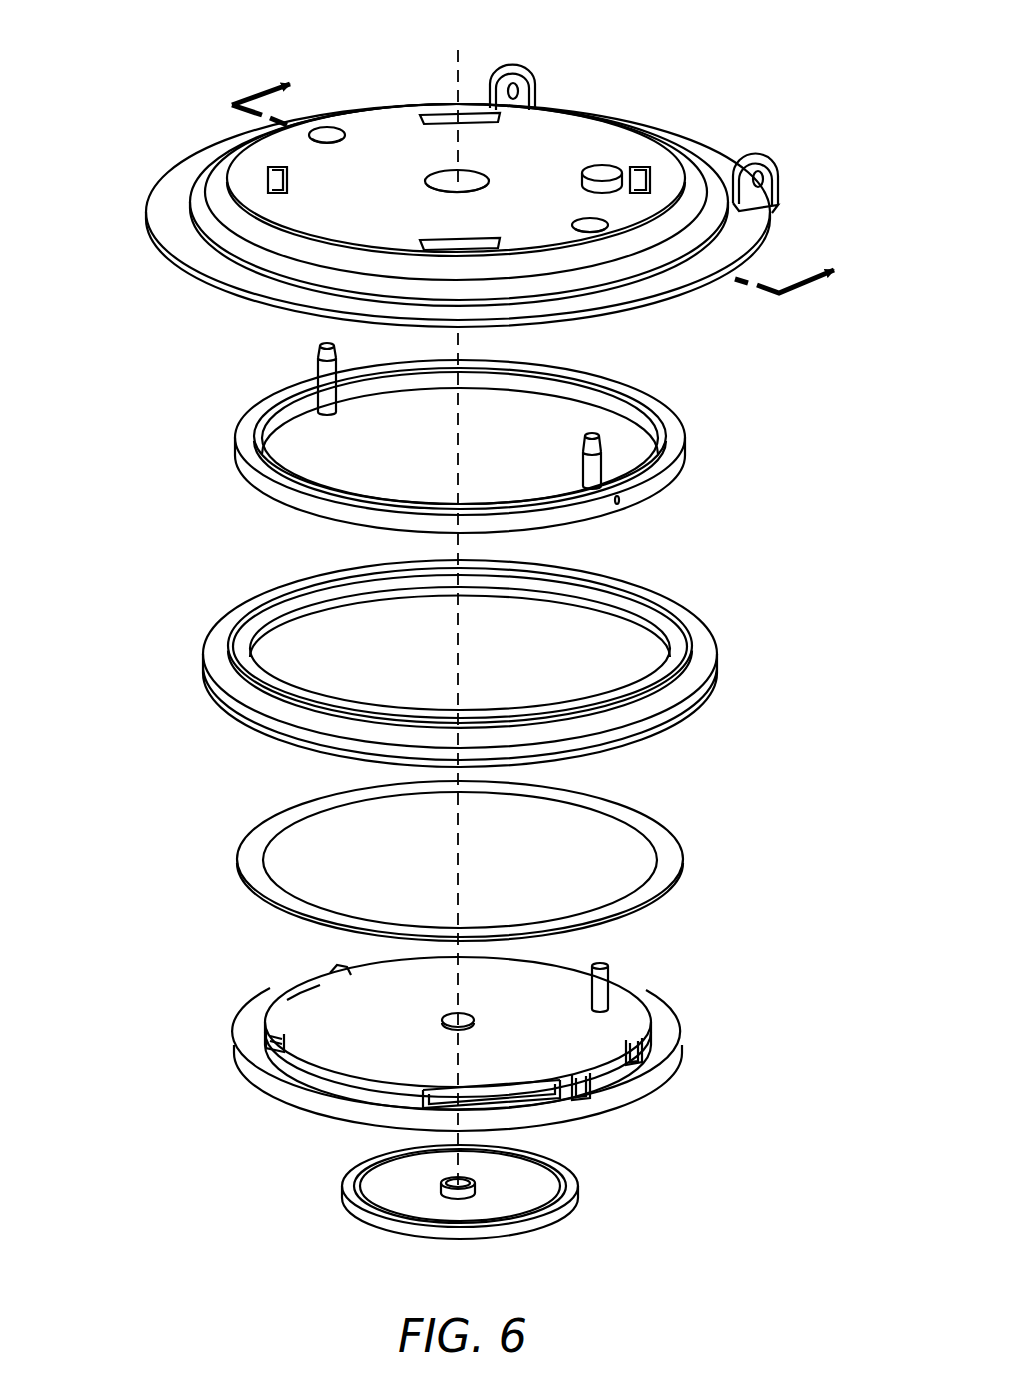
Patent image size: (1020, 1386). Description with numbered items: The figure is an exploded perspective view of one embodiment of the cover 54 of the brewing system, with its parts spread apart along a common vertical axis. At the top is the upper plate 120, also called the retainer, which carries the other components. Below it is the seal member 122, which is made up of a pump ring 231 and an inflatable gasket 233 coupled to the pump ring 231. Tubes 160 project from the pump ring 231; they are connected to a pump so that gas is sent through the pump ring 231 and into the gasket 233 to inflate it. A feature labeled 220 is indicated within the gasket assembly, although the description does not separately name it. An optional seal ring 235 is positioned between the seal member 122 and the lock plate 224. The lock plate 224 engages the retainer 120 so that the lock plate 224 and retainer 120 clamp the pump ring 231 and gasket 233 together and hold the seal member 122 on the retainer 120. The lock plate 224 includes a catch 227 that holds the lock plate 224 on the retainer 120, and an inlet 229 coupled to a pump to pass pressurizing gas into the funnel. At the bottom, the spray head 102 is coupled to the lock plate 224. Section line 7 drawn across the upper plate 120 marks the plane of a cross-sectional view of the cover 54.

The cover 54 is at (145, 103).
The section line 7- 7 is at (551, 172).
The upper plate 120 is at (718, 120).
The seal member 122 is at (713, 414).
The tubes 160 is at (316, 372).
The pump ring 231 is at (203, 411).
The inflatable gasket 233 is at (735, 622).
The seal ring 220 is at (462, 628).
The seal ring 235 is at (707, 834).
The lock plate 224 is at (716, 1009).
The catch 227 is at (545, 1102).
The inlet 229 is at (619, 973).
The spray head 102 is at (340, 1195).